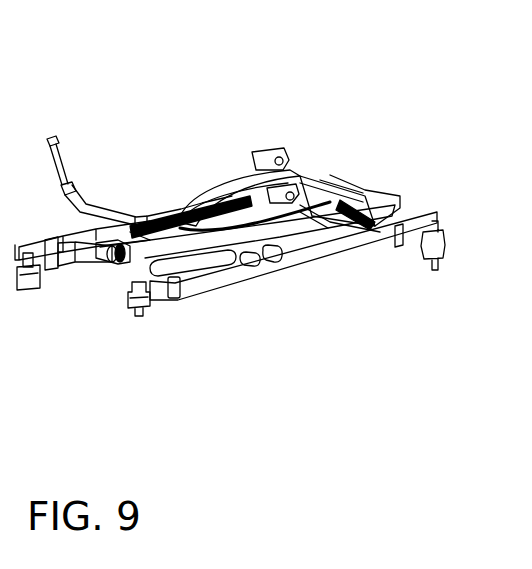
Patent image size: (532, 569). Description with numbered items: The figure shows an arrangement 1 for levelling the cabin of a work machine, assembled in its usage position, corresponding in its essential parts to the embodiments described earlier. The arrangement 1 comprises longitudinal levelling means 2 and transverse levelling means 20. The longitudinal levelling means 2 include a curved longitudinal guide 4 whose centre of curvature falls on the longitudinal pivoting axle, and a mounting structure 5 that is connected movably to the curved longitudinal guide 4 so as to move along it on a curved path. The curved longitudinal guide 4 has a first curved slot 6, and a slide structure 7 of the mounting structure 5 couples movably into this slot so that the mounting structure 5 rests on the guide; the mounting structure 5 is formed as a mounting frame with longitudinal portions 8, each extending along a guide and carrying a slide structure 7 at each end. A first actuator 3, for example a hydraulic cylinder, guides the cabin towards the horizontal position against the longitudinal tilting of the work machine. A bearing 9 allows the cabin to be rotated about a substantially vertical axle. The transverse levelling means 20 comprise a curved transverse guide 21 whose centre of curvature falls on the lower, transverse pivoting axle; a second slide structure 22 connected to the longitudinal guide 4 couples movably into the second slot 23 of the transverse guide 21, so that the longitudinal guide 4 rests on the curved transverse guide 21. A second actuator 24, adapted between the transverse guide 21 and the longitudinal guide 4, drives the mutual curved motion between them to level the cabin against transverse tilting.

The arrangement 1 is at (228, 62).
The longitudinal levelling means 2 is at (350, 163).
The first actuator 3 is at (279, 240).
The curved longitudinal guide 4 is at (328, 226).
The mounting structure 5 is at (313, 207).
The first curved slot 6 is at (200, 268).
The slide structure 7 is at (192, 262).
The longitudinal portion 8 is at (253, 242).
The bearing 9 is at (207, 202).
The transverse levelling means 20 is at (98, 273).
The curved transverse guide 21 is at (364, 226).
The second slide structure 22 is at (167, 277).
The second slot 23 is at (130, 262).
The second actuator 24 is at (65, 256).